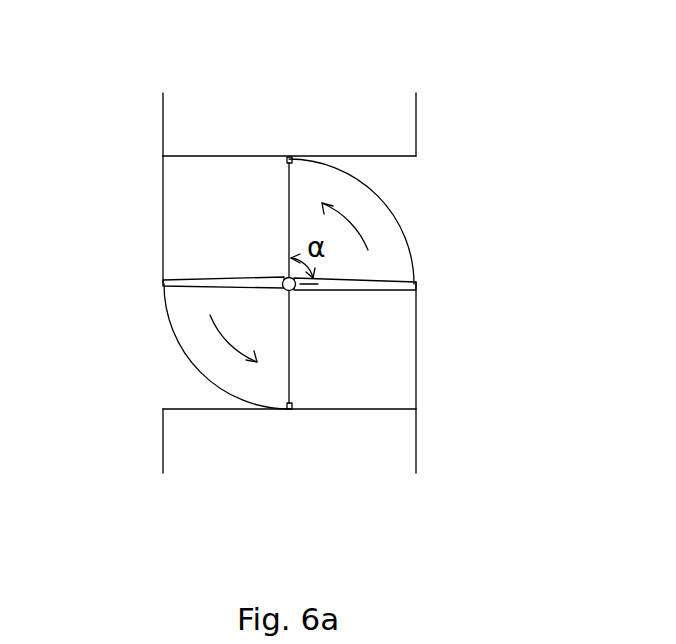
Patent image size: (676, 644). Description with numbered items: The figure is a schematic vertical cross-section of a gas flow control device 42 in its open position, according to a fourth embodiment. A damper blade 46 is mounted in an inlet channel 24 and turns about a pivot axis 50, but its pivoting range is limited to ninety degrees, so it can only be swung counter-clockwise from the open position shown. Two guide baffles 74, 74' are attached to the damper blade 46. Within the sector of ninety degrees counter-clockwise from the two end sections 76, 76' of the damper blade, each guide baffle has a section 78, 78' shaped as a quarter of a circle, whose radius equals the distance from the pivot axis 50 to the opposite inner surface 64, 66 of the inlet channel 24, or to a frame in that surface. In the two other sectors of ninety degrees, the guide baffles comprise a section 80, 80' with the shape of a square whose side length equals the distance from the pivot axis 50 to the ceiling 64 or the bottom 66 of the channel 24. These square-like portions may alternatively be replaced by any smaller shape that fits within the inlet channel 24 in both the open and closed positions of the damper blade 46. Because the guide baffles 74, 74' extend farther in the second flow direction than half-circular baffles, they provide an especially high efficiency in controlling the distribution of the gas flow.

The gas flow control device 42 is at (360, 103).
The inner surface (ceiling) 64 is at (253, 156).
The inner surface (bottom) 66 is at (322, 410).
The square-shaped baffle section 80' is at (124, 206).
The square-shaped baffle section 80 is at (471, 356).
The inlet channel 24 is at (368, 410).
The damper blade 46 is at (383, 278).
The guide baffle 74 is at (296, 101).
The guide baffle 74' is at (252, 448).
The quarter-circle baffle section 78 is at (399, 214).
The quarter-circle baffle section 78' is at (190, 346).
The end section of damper blade 76' is at (174, 266).
The end section of damper blade 76 is at (408, 306).
The pivot axis 50 is at (283, 290).